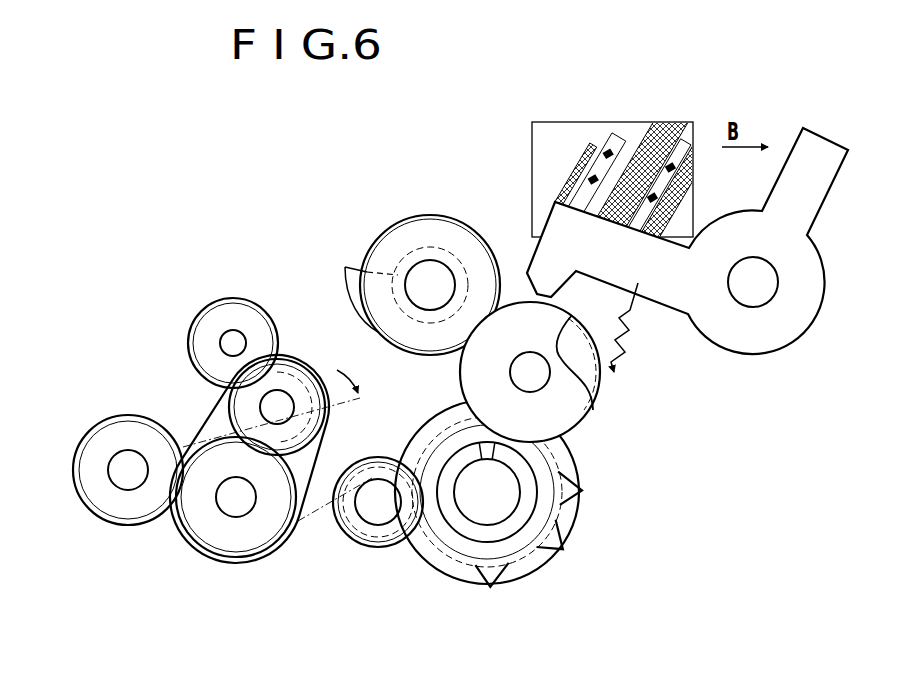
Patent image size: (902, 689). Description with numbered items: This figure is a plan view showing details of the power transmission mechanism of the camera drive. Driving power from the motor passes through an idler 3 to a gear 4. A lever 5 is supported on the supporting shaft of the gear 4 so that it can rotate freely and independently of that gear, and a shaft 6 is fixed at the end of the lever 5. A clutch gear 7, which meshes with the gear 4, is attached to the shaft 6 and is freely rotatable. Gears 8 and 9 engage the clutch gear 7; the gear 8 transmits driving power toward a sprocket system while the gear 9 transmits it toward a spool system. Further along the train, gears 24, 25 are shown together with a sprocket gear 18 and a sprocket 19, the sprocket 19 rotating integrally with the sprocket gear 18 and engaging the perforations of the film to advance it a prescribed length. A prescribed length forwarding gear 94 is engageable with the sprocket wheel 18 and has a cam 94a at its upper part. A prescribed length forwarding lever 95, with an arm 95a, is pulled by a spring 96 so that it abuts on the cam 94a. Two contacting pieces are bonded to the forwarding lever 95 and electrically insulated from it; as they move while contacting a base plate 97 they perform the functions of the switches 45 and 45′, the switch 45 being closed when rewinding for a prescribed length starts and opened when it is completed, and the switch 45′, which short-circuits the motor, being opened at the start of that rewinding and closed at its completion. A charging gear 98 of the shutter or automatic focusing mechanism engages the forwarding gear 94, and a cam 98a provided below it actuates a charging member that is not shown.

The idler 3 is at (133, 516).
The gear 4 is at (213, 533).
The lever 5 is at (272, 553).
The shaft 6 is at (278, 393).
The clutch gear 7 is at (279, 382).
The gear 8 is at (233, 317).
The gear 9 is at (218, 300).
The sprocket gear 18 is at (467, 535).
The sprocket 19 is at (488, 513).
The gear 24 is at (378, 533).
The gear 25 is at (367, 533).
The switch 45 is at (684, 194).
The switch 45' is at (621, 150).
The prescribed length forwarding gear 94 is at (553, 385).
The cam 94a is at (577, 413).
The prescribed length forwarding lever 95 is at (699, 217).
The lever arm 95a is at (818, 147).
The spring 96 is at (633, 320).
The base plate 97 is at (638, 158).
The charging gear 98 is at (416, 222).
The cam 98a is at (352, 263).